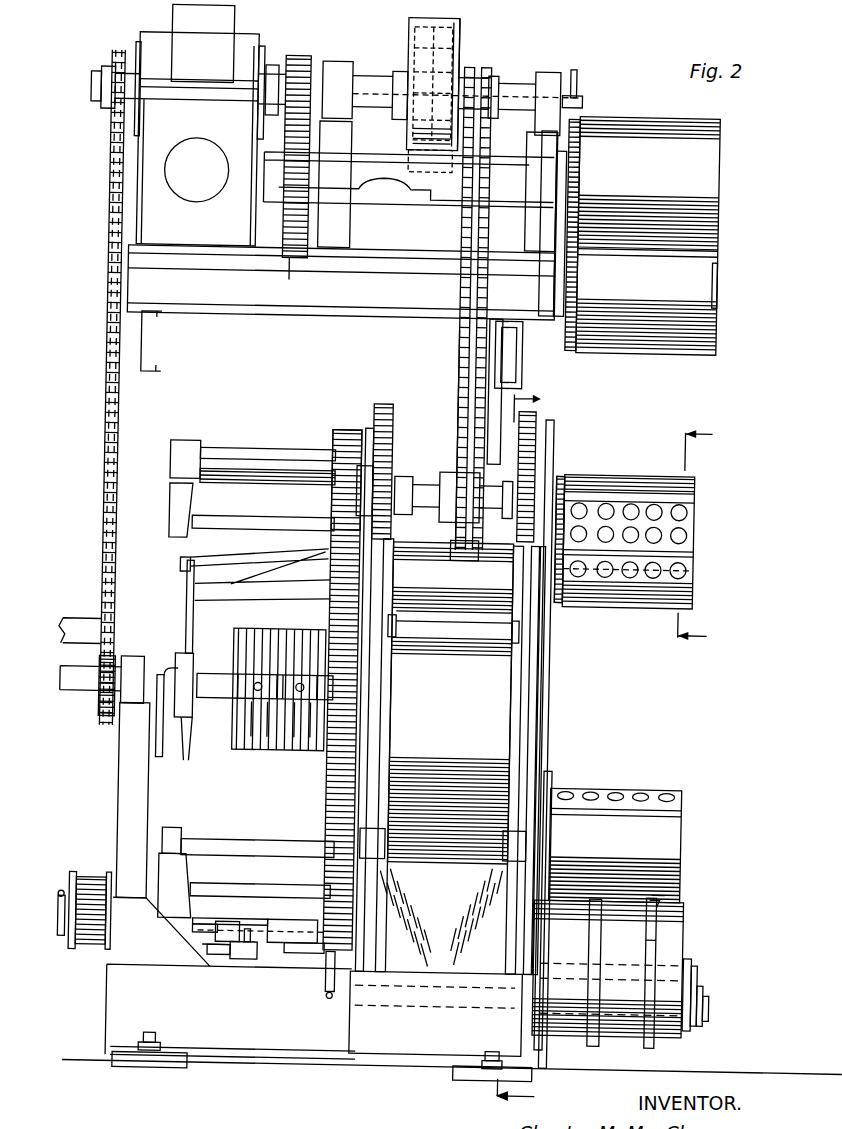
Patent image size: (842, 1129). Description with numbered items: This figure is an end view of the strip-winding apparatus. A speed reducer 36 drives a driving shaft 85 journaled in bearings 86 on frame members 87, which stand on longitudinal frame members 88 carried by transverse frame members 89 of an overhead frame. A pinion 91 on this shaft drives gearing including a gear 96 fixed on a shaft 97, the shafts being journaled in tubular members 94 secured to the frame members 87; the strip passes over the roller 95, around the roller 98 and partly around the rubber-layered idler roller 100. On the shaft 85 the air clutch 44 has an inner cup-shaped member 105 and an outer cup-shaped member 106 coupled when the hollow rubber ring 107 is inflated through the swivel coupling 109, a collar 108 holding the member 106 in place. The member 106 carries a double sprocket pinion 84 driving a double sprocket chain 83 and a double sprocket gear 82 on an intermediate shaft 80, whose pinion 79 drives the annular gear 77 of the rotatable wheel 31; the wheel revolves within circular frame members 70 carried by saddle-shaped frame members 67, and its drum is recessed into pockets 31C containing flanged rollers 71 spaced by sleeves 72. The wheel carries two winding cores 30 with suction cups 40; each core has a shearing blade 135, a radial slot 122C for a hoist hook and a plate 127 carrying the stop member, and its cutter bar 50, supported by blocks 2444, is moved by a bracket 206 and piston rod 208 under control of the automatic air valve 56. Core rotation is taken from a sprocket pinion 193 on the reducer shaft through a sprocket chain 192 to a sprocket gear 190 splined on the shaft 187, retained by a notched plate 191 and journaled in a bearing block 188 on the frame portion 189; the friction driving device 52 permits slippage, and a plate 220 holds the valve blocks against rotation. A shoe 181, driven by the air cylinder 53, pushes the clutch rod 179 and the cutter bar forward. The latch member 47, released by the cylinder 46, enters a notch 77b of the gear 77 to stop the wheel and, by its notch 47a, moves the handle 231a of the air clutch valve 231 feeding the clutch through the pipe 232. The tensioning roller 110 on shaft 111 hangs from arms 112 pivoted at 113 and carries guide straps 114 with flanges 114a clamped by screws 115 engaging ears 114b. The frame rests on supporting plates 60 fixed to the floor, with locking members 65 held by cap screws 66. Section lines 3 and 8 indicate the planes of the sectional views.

The speed reducer 36 is at (236, 36).
The sprocket pinion 193 is at (112, 63).
The sprocket chain 192 is at (104, 424).
The longitudinal frame members 88 is at (214, 305).
The gear 96 is at (294, 283).
The pinion 91 is at (298, 58).
The bearings 86 is at (333, 70).
The frame members 87 is at (342, 249).
The tubular member 94 is at (365, 160).
The shaft 97 is at (385, 196).
The air clutch 44 is at (432, 27).
The hollow rubber ring 107 is at (413, 44).
The inner cup-shaped clutch member 105 is at (412, 62).
The outer cup-shaped clutch member 106 is at (460, 28).
The collar 108 is at (493, 77).
The driving shaft 85 is at (515, 83).
The double sprocket pinion 84 is at (471, 66).
The double sprocket chain 83 is at (458, 340).
The double sprocket gear 82 is at (463, 558).
The swivel coupling 109 is at (582, 98).
The roller 95 is at (700, 118).
The roller 98 is at (718, 246).
The idler roller 100 is at (710, 331).
The actuating rod 179 is at (170, 478).
The cutter bar 50 is at (229, 456).
The bracket 206 is at (175, 494).
The piston rod 208 is at (260, 528).
The automatic air valve 56 is at (182, 655).
The bearing block 188 is at (137, 668).
The shaft 187 is at (73, 693).
The sprocket gear 190 is at (98, 719).
The plate 220 is at (155, 718).
The notched plate 191 is at (73, 626).
The frame portion 189 is at (127, 792).
The friction driving device 52 is at (250, 634).
The pinion 79 is at (340, 468).
The annular gear 77 is at (348, 723).
The circular frame members 70 is at (378, 408).
The intermediate shaft 80 is at (427, 488).
The transverse frame members 89 is at (150, 345).
The rotatable wheel 31 is at (553, 449).
The pockets 31C is at (458, 646).
The saddle-shaped frame members 67 is at (373, 855).
The flanged rollers 71 is at (394, 624).
The sleeves 72 is at (431, 614).
The notches 77b is at (358, 948).
The arms 112 is at (515, 980).
The shearing blade 135 is at (690, 498).
The radial slot 122C is at (683, 553).
The winding cores 30 is at (688, 599).
The suction cups 40 is at (650, 507).
The radially extending plate 127 is at (551, 611).
The cylindrical roller 110 is at (680, 1040).
The guide straps 114 is at (663, 928).
The projecting ears 114b is at (660, 903).
The clamping screws 115 is at (673, 900).
The annular flanges 114a is at (653, 947).
The shaft 111 is at (705, 974).
The pivot 113 is at (713, 1010).
The section line 8 is at (705, 536).
The section line 3 is at (530, 749).
The shoe 181 is at (132, 858).
The air cylinder 53 is at (73, 878).
The cylinder 46 is at (95, 950).
The latch member 47 is at (263, 925).
The notch 47a is at (255, 928).
The supporting blocks 2444 is at (197, 930).
The air clutch valve 231 is at (248, 958).
The handle 231a is at (210, 946).
The pipe 232 is at (294, 956).
The cap screws 66 is at (150, 1038).
The locking members 65 is at (146, 1054).
The supporting plates 60 is at (178, 1070).